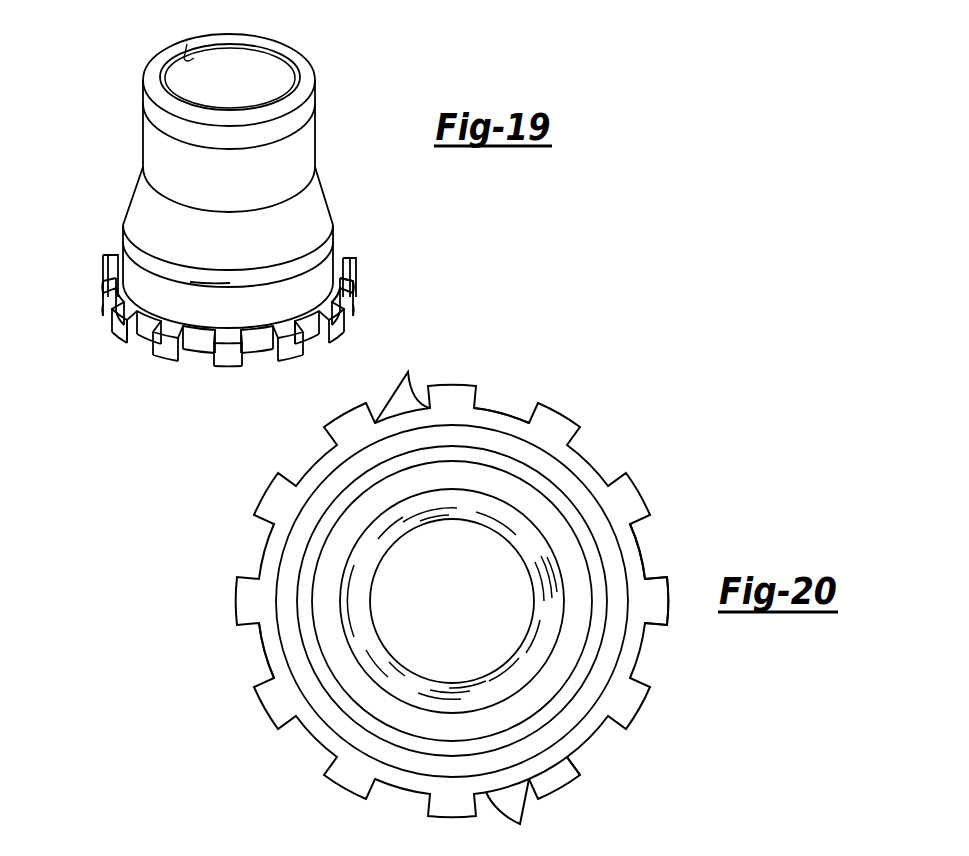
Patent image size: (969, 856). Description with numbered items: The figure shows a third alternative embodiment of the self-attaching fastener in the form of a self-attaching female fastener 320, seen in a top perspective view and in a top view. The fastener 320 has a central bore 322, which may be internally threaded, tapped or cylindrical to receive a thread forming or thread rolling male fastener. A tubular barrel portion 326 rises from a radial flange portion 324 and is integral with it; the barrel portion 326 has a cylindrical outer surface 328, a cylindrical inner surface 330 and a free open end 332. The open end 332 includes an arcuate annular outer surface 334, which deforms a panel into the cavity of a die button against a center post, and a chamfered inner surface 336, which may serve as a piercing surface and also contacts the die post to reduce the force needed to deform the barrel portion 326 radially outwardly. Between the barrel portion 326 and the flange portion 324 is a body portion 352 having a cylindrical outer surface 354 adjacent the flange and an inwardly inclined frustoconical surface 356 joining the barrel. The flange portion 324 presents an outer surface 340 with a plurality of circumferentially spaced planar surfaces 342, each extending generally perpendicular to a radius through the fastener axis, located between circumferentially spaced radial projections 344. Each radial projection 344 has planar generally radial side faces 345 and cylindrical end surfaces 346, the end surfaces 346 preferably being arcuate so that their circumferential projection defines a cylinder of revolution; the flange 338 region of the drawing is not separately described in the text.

In FIG. 19, the self-attaching female fastener 320 is at (112, 130).
In FIG. 20, the self-attaching female fastener 320 is at (588, 402).
In FIG. 20, the bore 322 is at (522, 640).
In FIG. 19, the radial flange portion 324 is at (342, 256).
In FIG. 20, the radial flange portion 324 is at (652, 656).
In FIG. 19, the tubular barrel portion 326 is at (304, 140).
In FIG. 20, the tubular barrel portion 326 is at (345, 686).
In FIG. 19, the cylindrical outer surface 328 is at (213, 175).
In FIG. 20, the cylindrical outer surface 328 is at (310, 583).
In FIG. 19, the cylindrical inner surface 330 is at (238, 66).
In FIG. 20, the cylindrical inner surface 330 is at (352, 588).
In FIG. 19, the free open end 332 is at (278, 79).
In FIG. 20, the free open end 332 is at (462, 849).
In FIG. 19, the arcuate annular outer surface 334 is at (150, 70).
In FIG. 20, the arcuate annular outer surface 334 is at (352, 517).
In FIG. 19, the chamfered inner surface 336 is at (183, 60).
In FIG. 20, the chamfered inner surface 336 is at (352, 640).
In FIG. 19, the flange 338 is at (138, 355).
In FIG. 19, the outer surface 340 is at (258, 355).
In FIG. 19, the planar surfaces 342 is at (343, 288).
In FIG. 20, the planar surfaces 342 is at (498, 407).
In FIG. 19, the radial projections 344 is at (341, 326).
In FIG. 20, the radial projections 344 is at (648, 489).
In FIG. 19, the planar generally radial side faces 345 is at (104, 285).
In FIG. 20, the planar generally radial side faces 345 is at (408, 374).
In FIG. 19, the cylindrical end surfaces 346 is at (128, 322).
In FIG. 20, the cylindrical end surfaces 346 is at (566, 790).
In FIG. 19, the body portion 352 is at (148, 257).
In FIG. 19, the cylindrical outer surface 354 is at (270, 300).
In FIG. 19, the inwardly inclined frustoconical surface 356 is at (210, 282).